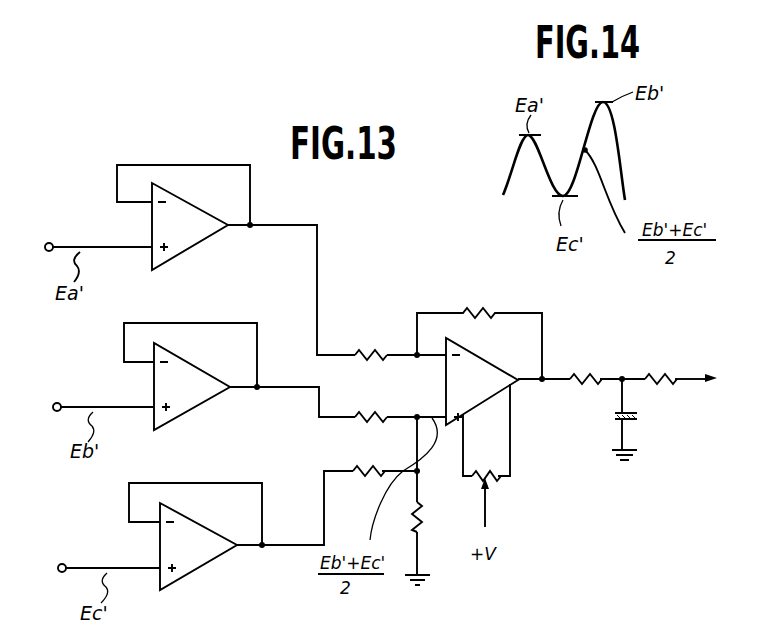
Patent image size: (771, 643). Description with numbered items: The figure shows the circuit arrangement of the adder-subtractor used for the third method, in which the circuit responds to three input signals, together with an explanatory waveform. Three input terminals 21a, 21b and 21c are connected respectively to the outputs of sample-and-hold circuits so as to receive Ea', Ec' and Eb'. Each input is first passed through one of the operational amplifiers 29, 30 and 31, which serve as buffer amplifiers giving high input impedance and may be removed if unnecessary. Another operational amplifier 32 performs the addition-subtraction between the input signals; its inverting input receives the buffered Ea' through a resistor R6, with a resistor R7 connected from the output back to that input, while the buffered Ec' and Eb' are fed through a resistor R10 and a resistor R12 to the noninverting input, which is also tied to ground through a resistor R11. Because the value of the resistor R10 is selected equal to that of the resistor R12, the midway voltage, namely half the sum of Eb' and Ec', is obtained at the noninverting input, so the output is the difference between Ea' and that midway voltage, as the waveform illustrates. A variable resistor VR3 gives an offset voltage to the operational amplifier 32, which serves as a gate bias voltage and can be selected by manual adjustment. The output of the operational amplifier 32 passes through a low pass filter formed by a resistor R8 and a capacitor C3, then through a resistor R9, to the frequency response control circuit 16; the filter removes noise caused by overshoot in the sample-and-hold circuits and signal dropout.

The input terminal 21a is at (47, 243).
The input terminal 21b is at (55, 403).
The input terminal 21c is at (62, 565).
The operational amplifier 29 is at (186, 197).
The operational amplifier 30 is at (180, 357).
The operational amplifier 31 is at (190, 515).
The operational amplifier 32 is at (476, 352).
The resistor R6 is at (352, 352).
The resistor R7 is at (466, 312).
The resistor R8 is at (576, 374).
The resistor R9 is at (649, 374).
The resistor R10 is at (352, 414).
The resistor R11 is at (439, 517).
The resistor R12 is at (350, 467).
The capacitor C3 is at (636, 413).
The variable resistor VR3 is at (497, 482).
The frequency response control circuit 16 is at (726, 379).